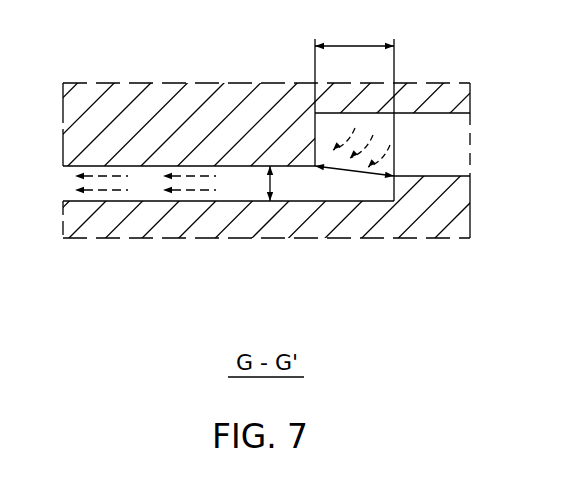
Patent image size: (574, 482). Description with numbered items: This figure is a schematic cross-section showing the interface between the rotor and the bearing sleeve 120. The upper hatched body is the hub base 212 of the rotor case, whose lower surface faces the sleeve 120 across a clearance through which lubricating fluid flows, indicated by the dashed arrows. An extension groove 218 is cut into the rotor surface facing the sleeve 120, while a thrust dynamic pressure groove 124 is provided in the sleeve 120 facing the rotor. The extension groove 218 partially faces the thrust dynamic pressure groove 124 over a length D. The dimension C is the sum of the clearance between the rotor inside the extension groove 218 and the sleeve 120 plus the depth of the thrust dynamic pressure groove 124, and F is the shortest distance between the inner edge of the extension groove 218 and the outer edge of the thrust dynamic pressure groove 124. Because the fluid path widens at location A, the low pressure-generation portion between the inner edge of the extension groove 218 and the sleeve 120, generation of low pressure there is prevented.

The hub base 212 is at (175, 115).
The extension groove 218 is at (315, 146).
The thrust dynamic pressure groove 124 is at (187, 203).
The sleeve 120 is at (360, 222).
The length of extension groove portion facing thrust dynamic pressure groove D is at (354, 66).
The sum of clearance distance and thrust groove depth C is at (258, 183).
The shortest distance between extension groove inner edge and thrust groove outer ed F is at (354, 180).
The low pressure-generation portion A is at (316, 185).